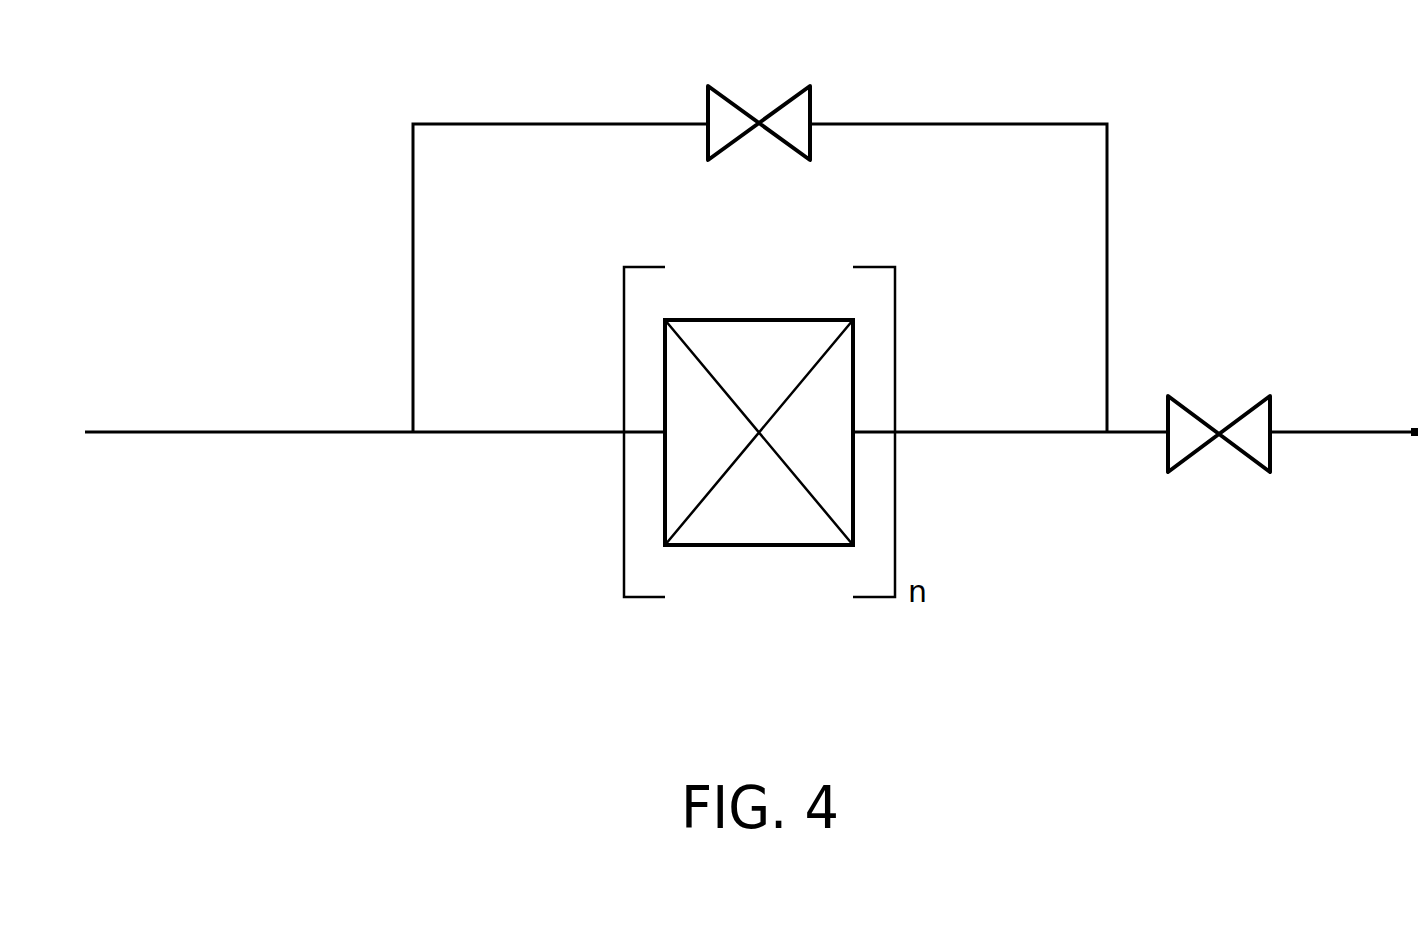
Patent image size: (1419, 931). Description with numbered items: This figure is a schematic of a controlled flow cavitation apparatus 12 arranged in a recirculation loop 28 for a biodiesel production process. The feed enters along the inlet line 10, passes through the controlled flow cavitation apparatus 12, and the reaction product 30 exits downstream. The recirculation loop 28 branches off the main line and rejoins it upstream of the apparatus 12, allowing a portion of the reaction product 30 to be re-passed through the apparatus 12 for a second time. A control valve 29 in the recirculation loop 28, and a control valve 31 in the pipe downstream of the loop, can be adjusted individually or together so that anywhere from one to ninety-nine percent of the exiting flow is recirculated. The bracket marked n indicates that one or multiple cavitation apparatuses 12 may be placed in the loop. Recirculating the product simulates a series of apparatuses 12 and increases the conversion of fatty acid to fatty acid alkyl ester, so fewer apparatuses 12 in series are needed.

The feed line 10 is at (186, 430).
The controlled flow cavitation apparatus 12 is at (768, 318).
The recirculation loop 28 is at (993, 123).
The control valve 29 is at (788, 100).
The reaction product 30 is at (1370, 431).
The control valve 31 is at (1238, 418).